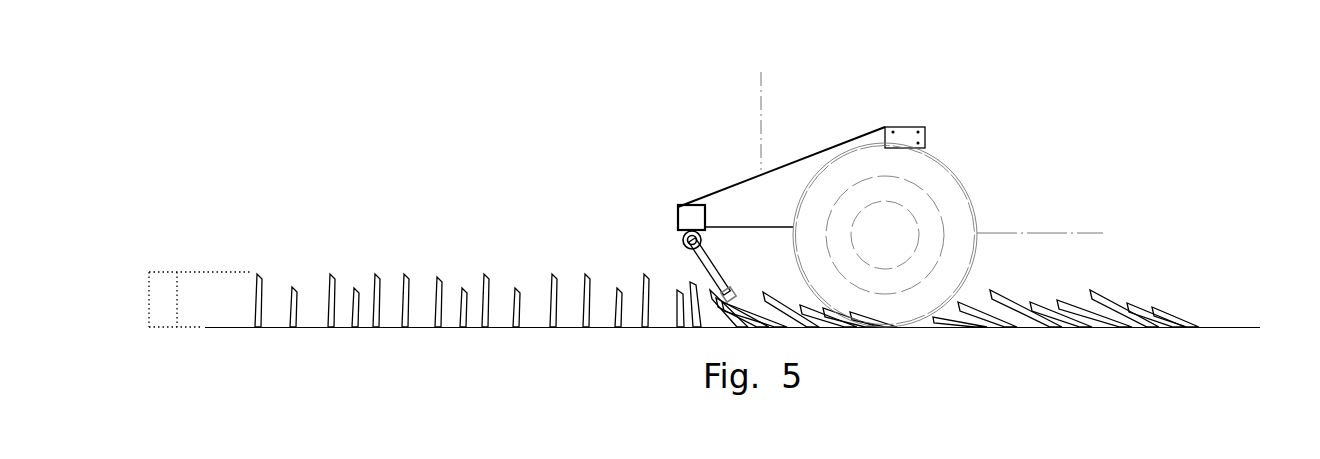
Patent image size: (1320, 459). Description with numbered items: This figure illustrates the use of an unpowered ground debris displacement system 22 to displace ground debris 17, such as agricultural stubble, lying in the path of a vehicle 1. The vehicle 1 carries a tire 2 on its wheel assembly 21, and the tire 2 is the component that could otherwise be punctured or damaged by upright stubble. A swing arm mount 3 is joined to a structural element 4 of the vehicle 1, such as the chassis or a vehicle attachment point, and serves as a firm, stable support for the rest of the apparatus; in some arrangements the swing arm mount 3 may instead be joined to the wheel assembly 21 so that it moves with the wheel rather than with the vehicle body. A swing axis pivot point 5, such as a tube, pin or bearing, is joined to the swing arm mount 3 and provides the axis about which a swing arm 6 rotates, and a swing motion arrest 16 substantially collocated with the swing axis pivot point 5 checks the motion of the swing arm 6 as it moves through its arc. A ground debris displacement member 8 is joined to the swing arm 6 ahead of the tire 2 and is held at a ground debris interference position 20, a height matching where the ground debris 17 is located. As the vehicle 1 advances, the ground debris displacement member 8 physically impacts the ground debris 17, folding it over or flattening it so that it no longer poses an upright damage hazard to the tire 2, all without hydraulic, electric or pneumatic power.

The vehicle 1 is at (1053, 185).
The tires 2 is at (977, 195).
The wheel assembly 21 is at (963, 155).
The ground debris displacement system 22 is at (742, 155).
The swing arm mount 3 is at (678, 213).
The structural element 4 is at (908, 132).
The swing axis pivot point 5 is at (680, 237).
The swing motion arrest 16 is at (685, 243).
The swing arm 6 is at (697, 270).
The ground debris displacement member 8 is at (737, 290).
The ground debris 17 is at (290, 287).
The ground debris interference position 20 is at (177, 298).